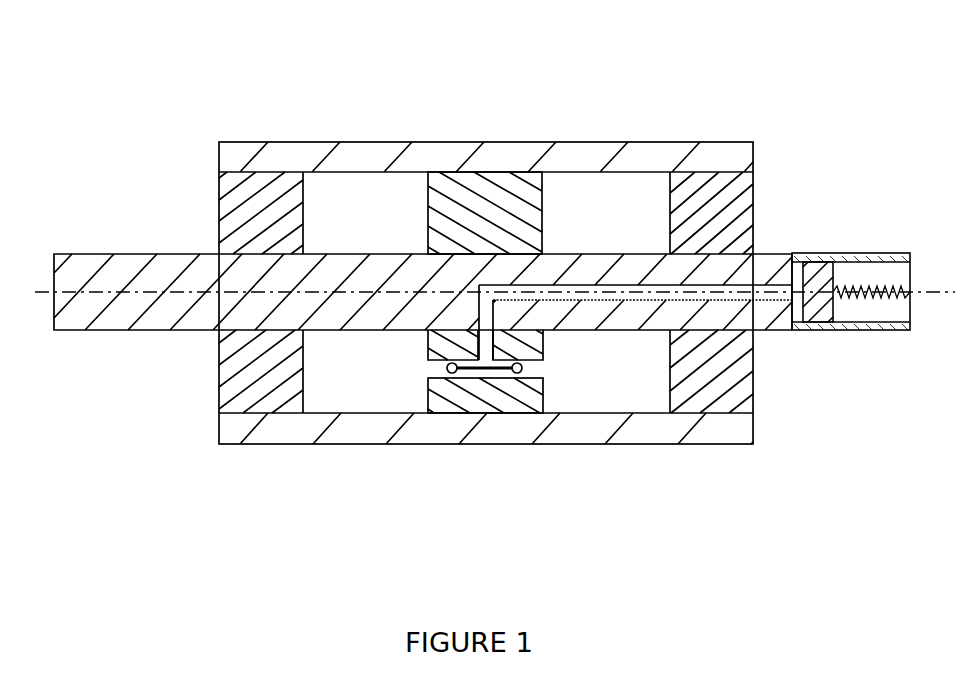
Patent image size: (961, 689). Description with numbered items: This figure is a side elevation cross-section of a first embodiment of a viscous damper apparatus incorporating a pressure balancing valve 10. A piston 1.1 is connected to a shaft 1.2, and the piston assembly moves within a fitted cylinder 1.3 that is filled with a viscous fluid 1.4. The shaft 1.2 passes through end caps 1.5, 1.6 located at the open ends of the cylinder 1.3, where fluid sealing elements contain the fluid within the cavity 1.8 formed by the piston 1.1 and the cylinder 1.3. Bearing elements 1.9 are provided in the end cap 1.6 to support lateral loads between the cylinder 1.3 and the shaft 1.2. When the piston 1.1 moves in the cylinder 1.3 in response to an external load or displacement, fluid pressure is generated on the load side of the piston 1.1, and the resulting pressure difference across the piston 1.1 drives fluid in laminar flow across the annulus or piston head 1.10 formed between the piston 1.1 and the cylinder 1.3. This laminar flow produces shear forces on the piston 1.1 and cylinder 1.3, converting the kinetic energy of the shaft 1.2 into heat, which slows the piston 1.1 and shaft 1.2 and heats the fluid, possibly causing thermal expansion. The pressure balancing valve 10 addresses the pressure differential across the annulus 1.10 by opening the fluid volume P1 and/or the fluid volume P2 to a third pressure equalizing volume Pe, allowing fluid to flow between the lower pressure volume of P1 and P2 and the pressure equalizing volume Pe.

The piston 1.1 is at (487, 195).
The shaft 1.2 is at (347, 268).
The cylinder 1.3 is at (595, 155).
The viscous fluid 1.4 is at (633, 200).
The end cap 1.5 is at (710, 200).
The end cap 1.6 is at (260, 195).
The cavity 1.8 is at (585, 380).
The bearing elements 1.9 is at (237, 333).
The annulus 1.10 is at (482, 387).
The pressure balancing valve 10 is at (463, 388).
The fluid volume P1 is at (365, 371).
The fluid volume P2 is at (606, 371).
The pressure equalizing volume Pe is at (762, 312).